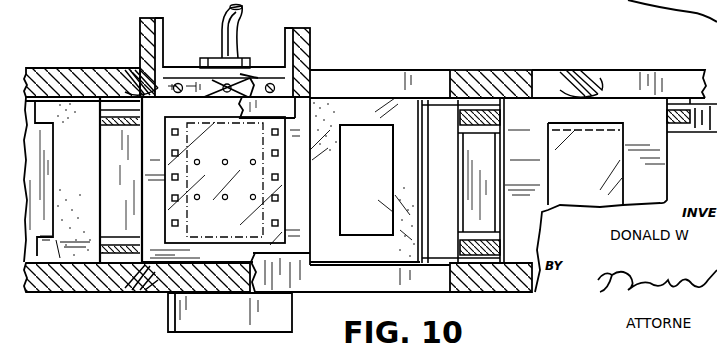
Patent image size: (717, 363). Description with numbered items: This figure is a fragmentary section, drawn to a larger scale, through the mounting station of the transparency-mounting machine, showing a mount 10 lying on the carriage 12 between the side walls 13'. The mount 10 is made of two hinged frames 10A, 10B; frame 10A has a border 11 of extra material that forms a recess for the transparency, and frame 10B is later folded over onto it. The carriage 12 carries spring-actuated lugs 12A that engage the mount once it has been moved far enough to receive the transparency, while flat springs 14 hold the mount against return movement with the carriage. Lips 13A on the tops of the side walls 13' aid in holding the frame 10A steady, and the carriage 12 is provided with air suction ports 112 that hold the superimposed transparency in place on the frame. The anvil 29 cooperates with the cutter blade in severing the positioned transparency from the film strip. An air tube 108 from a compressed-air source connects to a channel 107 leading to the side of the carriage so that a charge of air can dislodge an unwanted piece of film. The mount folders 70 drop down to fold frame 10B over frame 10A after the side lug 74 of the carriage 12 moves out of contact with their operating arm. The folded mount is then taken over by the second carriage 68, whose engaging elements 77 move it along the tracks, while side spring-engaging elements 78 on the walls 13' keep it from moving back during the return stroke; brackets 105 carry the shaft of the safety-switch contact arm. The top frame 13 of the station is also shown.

The mount 10 is at (333, 190).
The frame 10A is at (197, 252).
The frame 10B is at (343, 178).
The border 11 is at (222, 186).
The carriage 12 is at (121, 180).
The spring-actuated lugs 12A is at (131, 121).
The top frame 13 is at (225, 132).
The side walls 13' is at (507, 181).
The lips 13A is at (297, 258).
The flat springs 14 is at (135, 75).
The anvil 29 is at (267, 107).
The second carriage 68 is at (479, 182).
The mount folders 70 is at (429, 262).
The side lug 74 is at (230, 312).
The engaging elements 77 is at (492, 110).
The side spring-engaging elements 78 is at (587, 82).
The brackets 105 is at (473, 78).
The channel 107 is at (237, 82).
The air tube 108 is at (222, 32).
The air suction ports 112 is at (223, 200).